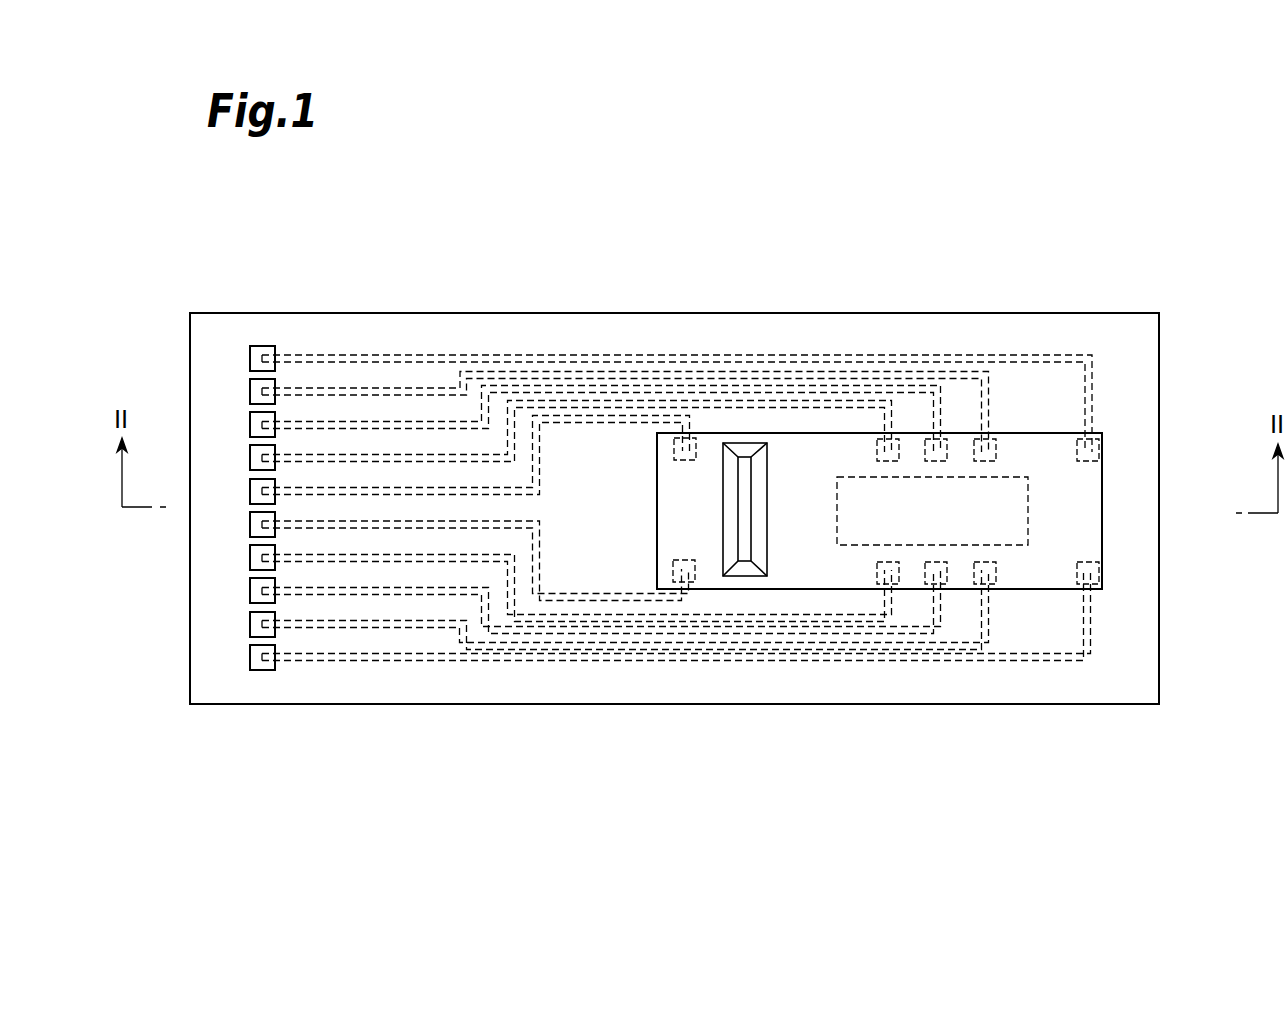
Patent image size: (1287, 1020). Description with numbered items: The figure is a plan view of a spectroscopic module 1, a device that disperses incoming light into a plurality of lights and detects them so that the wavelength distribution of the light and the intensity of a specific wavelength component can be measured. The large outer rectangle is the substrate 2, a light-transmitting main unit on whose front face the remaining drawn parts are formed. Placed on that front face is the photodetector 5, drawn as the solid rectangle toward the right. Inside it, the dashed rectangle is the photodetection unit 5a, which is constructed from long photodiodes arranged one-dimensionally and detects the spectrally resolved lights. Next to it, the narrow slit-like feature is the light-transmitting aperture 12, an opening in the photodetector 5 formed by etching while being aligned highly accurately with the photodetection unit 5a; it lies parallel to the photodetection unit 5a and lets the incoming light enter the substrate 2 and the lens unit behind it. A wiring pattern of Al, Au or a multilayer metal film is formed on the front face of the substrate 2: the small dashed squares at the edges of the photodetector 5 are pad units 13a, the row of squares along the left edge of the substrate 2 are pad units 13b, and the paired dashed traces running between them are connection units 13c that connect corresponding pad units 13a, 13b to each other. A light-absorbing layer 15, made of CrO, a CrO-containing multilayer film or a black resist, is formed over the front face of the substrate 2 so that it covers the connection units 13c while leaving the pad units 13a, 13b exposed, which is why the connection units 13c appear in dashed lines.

The spectroscopic module 1 is at (1004, 214).
The substrate 2 is at (345, 704).
The photodetector 5 is at (1038, 589).
The photodetection unit 5a is at (1030, 517).
The light-transmitting aperture 12 is at (748, 458).
The pad unit 13a is at (1101, 448).
The pad unit 13b is at (250, 388).
The connection unit 13c is at (477, 360).
The light-absorbing layer 15 is at (890, 332).